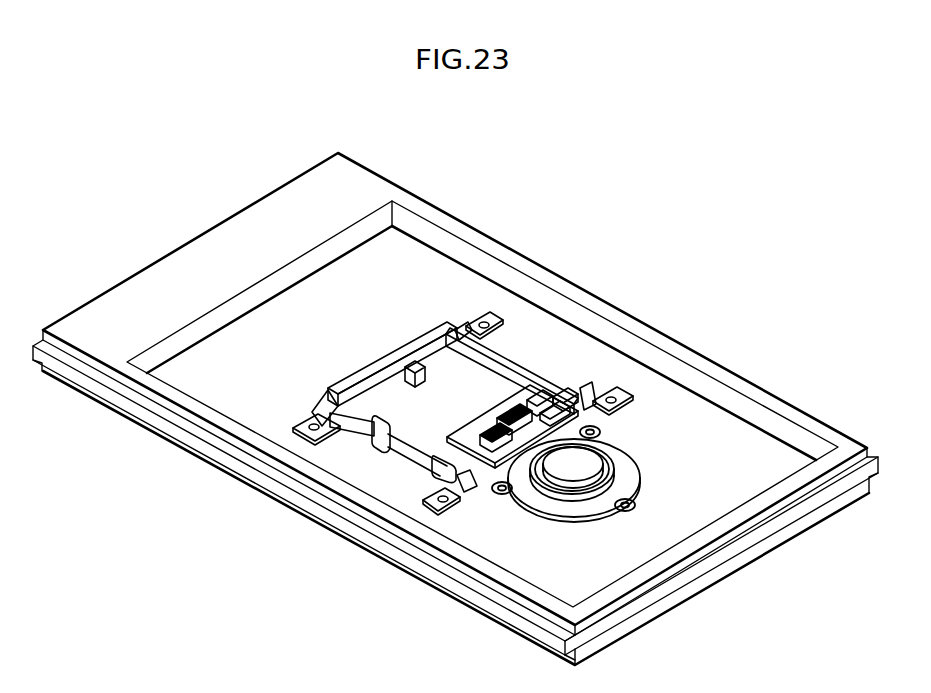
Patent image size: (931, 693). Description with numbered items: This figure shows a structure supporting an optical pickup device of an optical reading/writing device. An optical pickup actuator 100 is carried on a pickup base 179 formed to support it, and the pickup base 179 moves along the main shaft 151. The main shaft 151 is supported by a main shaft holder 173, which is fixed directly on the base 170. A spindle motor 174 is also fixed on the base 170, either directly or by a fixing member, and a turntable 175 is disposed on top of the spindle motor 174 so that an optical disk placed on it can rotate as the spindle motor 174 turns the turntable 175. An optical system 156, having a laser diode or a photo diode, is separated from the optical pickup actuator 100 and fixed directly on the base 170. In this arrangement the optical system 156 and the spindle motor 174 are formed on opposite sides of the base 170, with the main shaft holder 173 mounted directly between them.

The optical pickup actuator 100 is at (538, 395).
The main shaft 151 is at (365, 428).
The optical system 156 is at (425, 347).
The base 170 is at (750, 442).
The main shaft holder 173 is at (332, 404).
The spindle motor 174 is at (573, 487).
The turntable 175 is at (578, 455).
The pickup base 179 is at (522, 392).